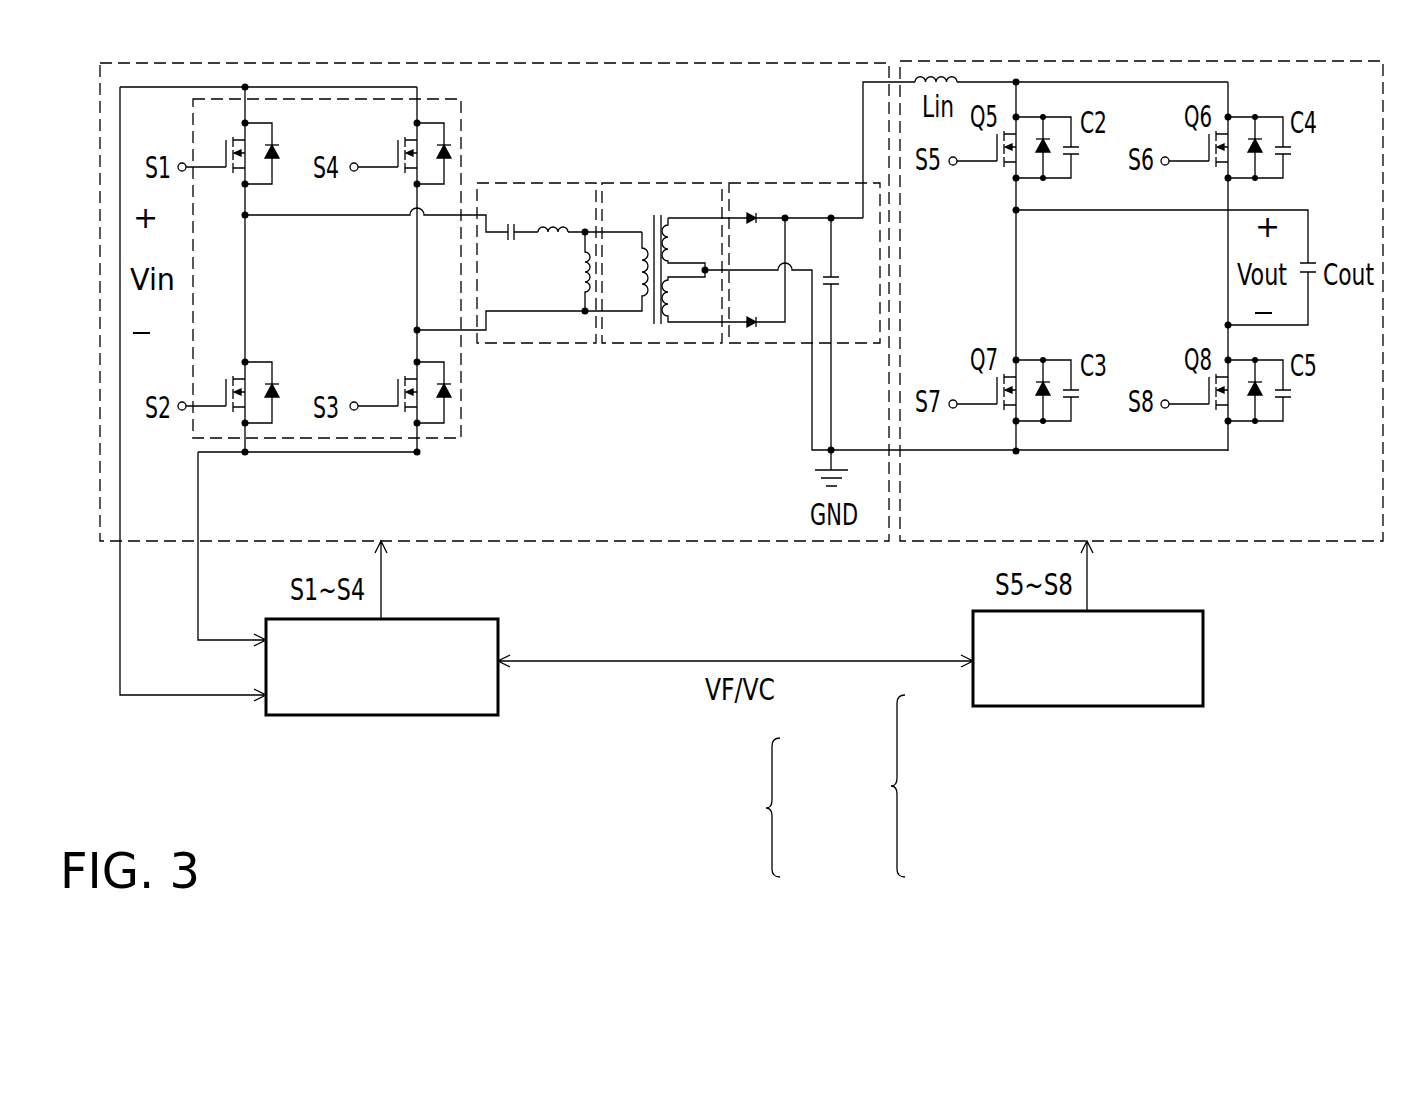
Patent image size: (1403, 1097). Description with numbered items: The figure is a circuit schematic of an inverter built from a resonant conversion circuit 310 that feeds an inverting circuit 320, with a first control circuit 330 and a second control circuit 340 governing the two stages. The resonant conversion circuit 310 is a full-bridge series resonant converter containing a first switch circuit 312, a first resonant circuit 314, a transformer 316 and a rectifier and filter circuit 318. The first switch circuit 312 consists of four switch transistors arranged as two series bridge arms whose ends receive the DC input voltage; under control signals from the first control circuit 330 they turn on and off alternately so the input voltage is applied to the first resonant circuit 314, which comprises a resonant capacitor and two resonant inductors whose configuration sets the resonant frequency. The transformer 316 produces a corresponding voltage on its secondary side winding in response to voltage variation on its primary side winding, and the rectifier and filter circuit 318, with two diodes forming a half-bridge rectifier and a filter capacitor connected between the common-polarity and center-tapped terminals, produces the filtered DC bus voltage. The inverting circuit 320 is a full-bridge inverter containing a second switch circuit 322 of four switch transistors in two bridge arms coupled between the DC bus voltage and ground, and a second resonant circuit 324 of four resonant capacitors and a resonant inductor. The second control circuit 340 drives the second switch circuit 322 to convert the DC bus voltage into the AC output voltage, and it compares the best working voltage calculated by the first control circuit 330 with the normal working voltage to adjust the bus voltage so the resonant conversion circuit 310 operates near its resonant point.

The resonant conversion circuit 310 is at (713, 62).
The first switch circuit 312 is at (462, 143).
The first resonant circuit 314 is at (533, 181).
The transformer 316 is at (653, 181).
The rectifier and filter circuit 318 is at (781, 181).
The inverting circuit 320 is at (1016, 61).
The second switch circuit 322 is at (764, 808).
The second resonant circuit 324 is at (889, 787).
The first control circuit 330 is at (433, 619).
The second control circuit 340 is at (1135, 611).